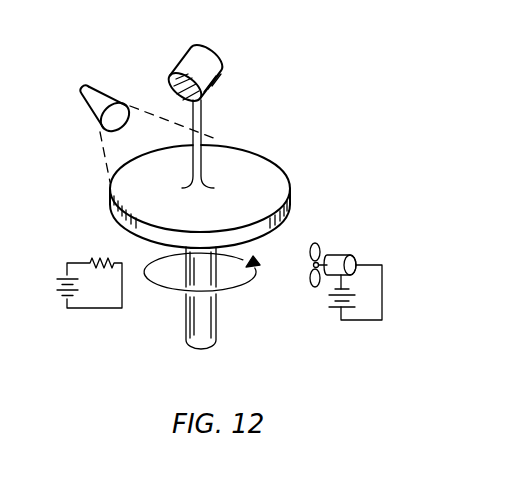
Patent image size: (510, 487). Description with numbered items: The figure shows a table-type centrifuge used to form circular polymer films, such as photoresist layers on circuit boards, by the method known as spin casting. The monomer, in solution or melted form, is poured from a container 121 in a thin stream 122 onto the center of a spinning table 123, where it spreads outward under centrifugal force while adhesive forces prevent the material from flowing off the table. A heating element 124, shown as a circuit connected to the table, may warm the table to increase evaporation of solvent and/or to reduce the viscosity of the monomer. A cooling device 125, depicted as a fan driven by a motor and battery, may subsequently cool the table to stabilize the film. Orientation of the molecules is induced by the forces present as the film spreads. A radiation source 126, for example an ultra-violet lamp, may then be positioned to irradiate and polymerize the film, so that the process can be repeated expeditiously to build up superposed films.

The container 121 is at (230, 75).
The thin stream 122 is at (203, 120).
The spinning table 123 is at (287, 213).
The heating element 124 is at (95, 308).
The cooling device 125 is at (383, 309).
The radiation source 126 is at (103, 85).